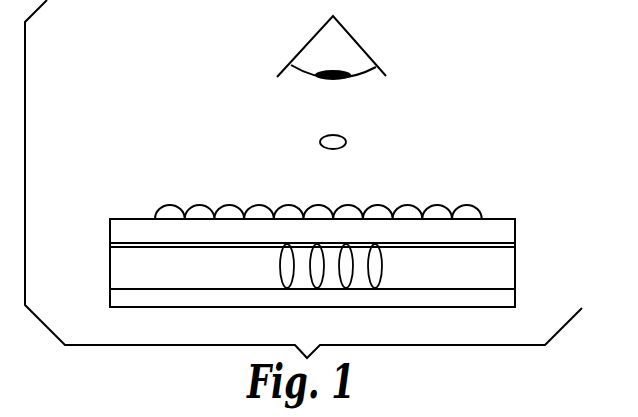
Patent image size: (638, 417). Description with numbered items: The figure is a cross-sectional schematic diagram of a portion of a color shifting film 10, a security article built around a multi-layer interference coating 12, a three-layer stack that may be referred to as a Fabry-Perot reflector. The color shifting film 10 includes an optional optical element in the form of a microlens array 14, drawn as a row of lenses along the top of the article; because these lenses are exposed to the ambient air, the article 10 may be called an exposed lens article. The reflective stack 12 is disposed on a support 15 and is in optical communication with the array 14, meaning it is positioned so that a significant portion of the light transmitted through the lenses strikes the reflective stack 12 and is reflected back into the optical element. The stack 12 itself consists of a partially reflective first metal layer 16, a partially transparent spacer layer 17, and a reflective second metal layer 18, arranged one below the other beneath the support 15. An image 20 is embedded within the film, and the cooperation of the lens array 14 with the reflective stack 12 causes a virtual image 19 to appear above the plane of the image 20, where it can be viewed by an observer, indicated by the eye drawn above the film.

The display device 10 is at (182, 50).
The display stack 12 is at (520, 242).
The lenticular lenses / bumps 14 is at (467, 207).
The top layer 15 is at (110, 227).
The intermediate thin layer 16 is at (110, 245).
The lens layer 17 is at (110, 270).
The bottom layer 18 is at (110, 300).
The light source / spot 19 is at (346, 140).
The lens elements 20 is at (382, 273).